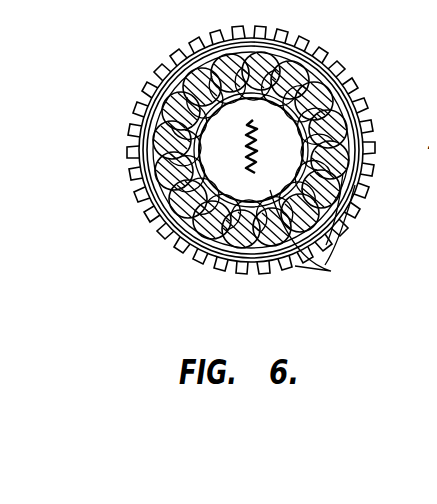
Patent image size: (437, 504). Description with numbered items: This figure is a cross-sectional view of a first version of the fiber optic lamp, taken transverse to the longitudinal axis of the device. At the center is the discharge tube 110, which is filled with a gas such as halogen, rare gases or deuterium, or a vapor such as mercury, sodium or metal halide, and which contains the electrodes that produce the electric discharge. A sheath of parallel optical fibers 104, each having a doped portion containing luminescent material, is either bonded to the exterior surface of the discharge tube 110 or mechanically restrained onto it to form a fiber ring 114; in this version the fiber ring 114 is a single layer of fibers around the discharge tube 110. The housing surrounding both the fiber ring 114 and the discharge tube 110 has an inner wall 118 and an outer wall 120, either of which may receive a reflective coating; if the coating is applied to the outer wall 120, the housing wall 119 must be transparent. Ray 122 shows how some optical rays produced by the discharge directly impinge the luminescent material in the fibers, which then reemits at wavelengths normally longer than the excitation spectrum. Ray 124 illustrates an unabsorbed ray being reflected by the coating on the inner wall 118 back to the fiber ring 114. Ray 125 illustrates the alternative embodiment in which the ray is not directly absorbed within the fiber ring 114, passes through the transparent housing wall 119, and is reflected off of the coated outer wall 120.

The optical fibers 104 is at (345, 90).
The discharge tube 110 is at (207, 253).
The fiber ring 114 is at (313, 226).
The inner wall 118 is at (160, 232).
The housing wall 119 is at (125, 175).
The outer wall 120 is at (138, 190).
The ray 122 is at (277, 82).
The ray 124 is at (236, 172).
The ray 125 is at (338, 185).